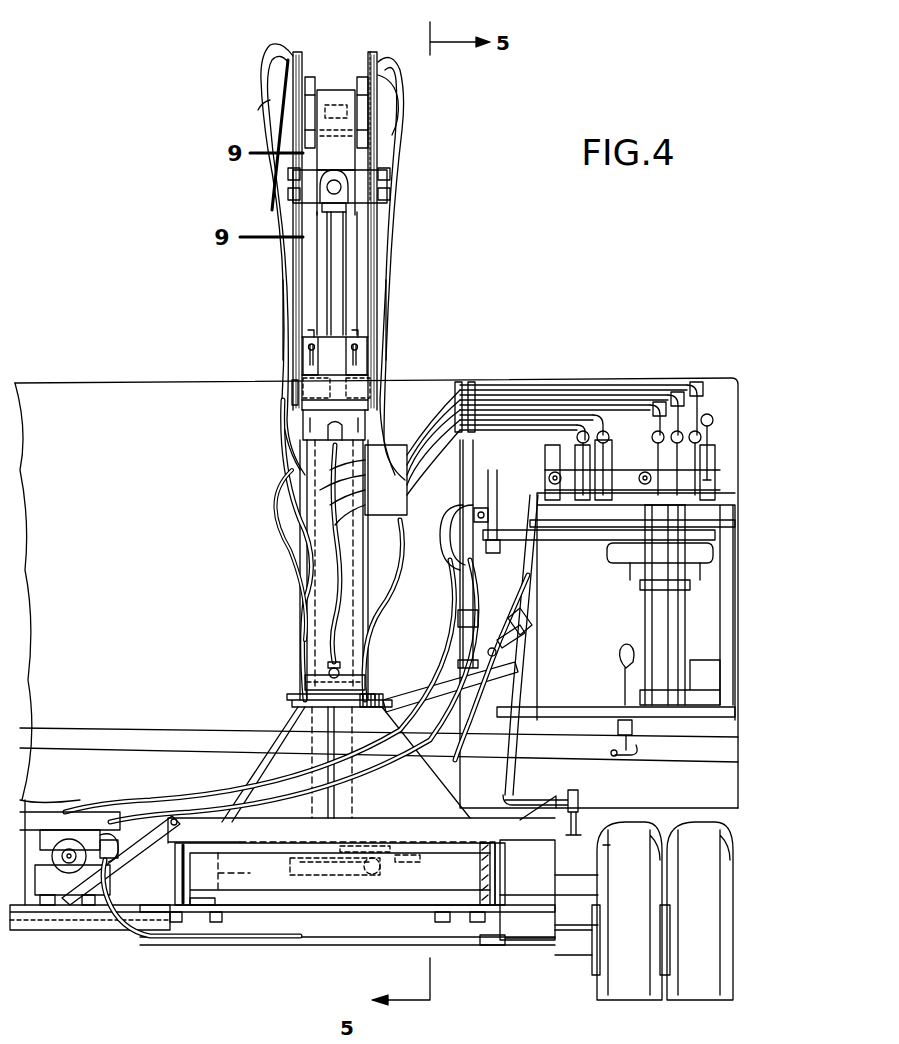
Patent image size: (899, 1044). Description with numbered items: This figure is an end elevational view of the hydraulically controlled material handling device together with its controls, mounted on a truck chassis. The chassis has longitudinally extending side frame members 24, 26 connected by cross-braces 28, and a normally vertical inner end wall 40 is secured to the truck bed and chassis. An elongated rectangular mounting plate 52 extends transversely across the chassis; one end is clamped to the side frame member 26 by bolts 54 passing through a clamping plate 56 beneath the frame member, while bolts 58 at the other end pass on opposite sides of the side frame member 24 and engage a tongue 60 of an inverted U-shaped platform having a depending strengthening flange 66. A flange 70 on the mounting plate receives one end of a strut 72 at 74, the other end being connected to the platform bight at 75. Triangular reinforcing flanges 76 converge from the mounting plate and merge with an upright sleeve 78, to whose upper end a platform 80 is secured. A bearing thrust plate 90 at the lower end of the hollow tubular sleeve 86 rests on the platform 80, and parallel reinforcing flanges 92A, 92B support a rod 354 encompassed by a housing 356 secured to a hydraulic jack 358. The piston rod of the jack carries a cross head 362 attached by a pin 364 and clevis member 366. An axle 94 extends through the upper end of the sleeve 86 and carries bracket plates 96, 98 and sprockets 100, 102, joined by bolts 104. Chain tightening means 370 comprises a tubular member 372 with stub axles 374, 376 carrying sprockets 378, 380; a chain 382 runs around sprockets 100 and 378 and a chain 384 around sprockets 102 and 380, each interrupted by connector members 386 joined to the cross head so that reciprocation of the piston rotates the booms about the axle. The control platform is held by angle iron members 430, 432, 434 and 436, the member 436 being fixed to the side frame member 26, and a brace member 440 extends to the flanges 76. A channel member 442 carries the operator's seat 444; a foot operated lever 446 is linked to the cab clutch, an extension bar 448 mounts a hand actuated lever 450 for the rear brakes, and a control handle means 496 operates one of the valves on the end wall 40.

The sprocket 100 is at (303, 52).
The bracket plate 98 is at (360, 55).
The sprocket 102 is at (388, 55).
The bracket plate 96 is at (310, 77).
The axle 94 is at (320, 90).
The bolts 104 is at (280, 105).
The connector members 386 is at (290, 185).
The cross head 362 is at (388, 183).
The pin 364 is at (345, 200).
The clevis member 366 is at (370, 225).
The hollow tubular sleeve 86 is at (350, 282).
The chain 384 is at (386, 300).
The chain 382 is at (282, 300).
The chain tightening means 370 is at (304, 345).
The hollow tubular member 372 is at (304, 368).
The stub axle 376 is at (376, 380).
The stub axle 374 is at (298, 393).
The sprocket 380 is at (375, 402).
The sprocket 378 is at (300, 420).
The inner end wall 40 is at (208, 484).
The control handle means 496 is at (712, 418).
The angle iron member 434 is at (725, 500).
The angle iron member 430 is at (725, 622).
The operator's seat 444 is at (590, 562).
The channel member 442 is at (650, 582).
The hand actuated lever 450 is at (525, 618).
The extension bar 448 is at (522, 640).
The foot operated lever 446 is at (620, 658).
The hydraulic jack 358 is at (315, 592).
The reinforcing flange 92B is at (382, 622).
The reinforcing flange 92A is at (300, 632).
The housing 356 is at (345, 670).
The rod 354 is at (368, 680).
The bearing thrust plate 90 is at (382, 700).
The brace member 440 is at (400, 708).
The platform 80 is at (292, 703).
The triangular reinforcing flanges 76 is at (270, 730).
The upright sleeve 78 is at (325, 757).
The angle iron member 436 is at (497, 753).
The angle iron member 432 is at (722, 712).
The strut 72 is at (150, 803).
The strut connection 74 is at (178, 824).
The flange 70 is at (245, 825).
The mounting plate 52 is at (247, 848).
The bolts 58 is at (178, 868).
The cross-braces 28 is at (318, 880).
The bolts 54 is at (410, 880).
The side frame member 26 is at (470, 883).
The clamping plate 56 is at (475, 918).
The tongue 60 is at (232, 903).
The side frame member 24 is at (182, 883).
The strengthening flange 66 is at (75, 925).
The strut connection 75 is at (80, 896).